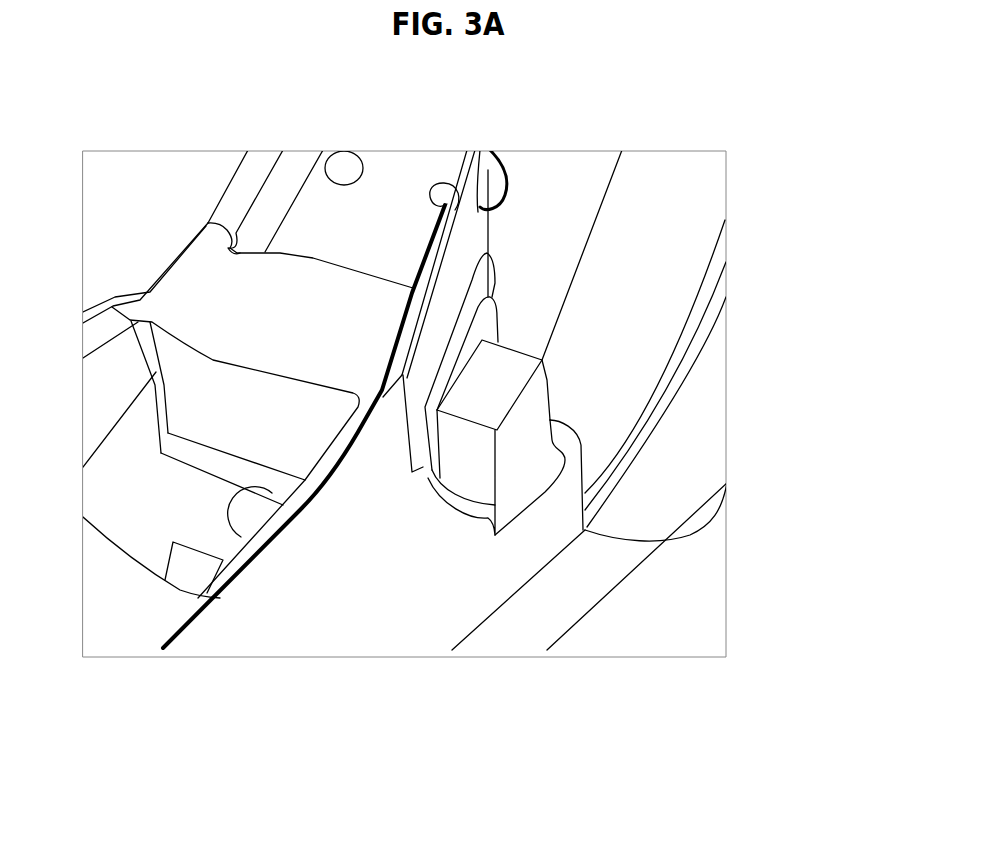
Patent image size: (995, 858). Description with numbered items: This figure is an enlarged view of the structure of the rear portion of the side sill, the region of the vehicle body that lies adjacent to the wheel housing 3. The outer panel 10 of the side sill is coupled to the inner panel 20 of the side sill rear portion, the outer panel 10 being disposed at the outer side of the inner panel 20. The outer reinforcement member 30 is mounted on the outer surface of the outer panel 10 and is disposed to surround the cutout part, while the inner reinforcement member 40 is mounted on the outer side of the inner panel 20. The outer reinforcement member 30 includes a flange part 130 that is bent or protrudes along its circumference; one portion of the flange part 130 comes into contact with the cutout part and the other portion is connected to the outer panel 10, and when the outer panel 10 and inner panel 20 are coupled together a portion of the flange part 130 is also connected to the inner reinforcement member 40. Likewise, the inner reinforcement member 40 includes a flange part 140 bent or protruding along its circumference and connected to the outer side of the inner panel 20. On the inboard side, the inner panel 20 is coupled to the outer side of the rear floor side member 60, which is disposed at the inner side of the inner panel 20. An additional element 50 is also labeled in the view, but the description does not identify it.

The wheel housing 3 is at (658, 197).
The outer panel 10 is at (460, 580).
The inner panel 20 is at (243, 568).
The outer reinforcement member 30 is at (520, 467).
The inner reinforcement member 40 is at (495, 293).
The upper beam 50 is at (253, 277).
The rear floor side member 60 is at (162, 530).
The flange part 130 is at (493, 326).
The flange part 140 is at (478, 275).